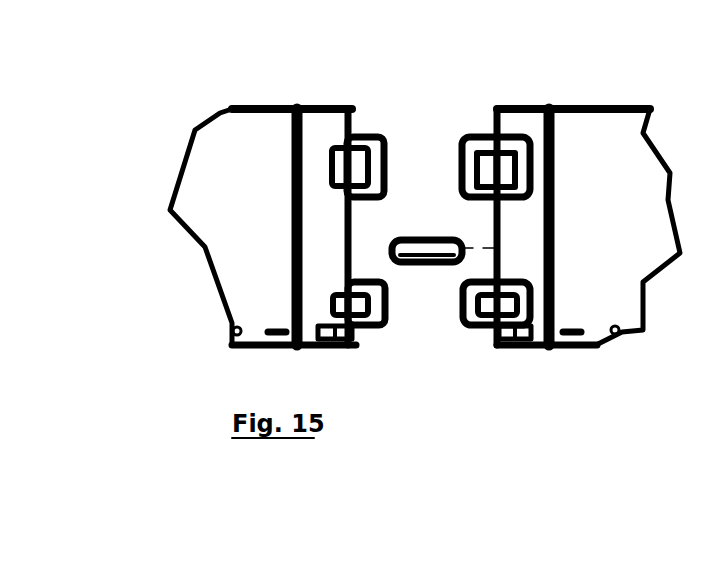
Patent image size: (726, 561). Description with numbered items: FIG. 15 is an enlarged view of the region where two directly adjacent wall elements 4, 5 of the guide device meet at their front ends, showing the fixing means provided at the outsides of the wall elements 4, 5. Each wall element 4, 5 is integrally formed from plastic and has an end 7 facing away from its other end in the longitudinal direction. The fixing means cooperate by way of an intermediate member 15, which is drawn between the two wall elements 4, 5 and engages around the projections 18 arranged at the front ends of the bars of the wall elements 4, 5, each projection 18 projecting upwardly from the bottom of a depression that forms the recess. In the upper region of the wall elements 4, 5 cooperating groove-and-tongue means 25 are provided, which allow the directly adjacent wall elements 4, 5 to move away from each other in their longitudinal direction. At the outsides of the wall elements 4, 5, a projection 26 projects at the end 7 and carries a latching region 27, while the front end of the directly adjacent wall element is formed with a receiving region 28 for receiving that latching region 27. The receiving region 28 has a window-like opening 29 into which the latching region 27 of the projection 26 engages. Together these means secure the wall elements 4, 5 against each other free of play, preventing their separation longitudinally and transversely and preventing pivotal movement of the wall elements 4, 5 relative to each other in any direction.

The wall element 4 is at (201, 112).
The wall element 5 is at (666, 120).
The end 7 is at (348, 128).
The intermediate member 15 is at (435, 237).
The projection 18 is at (340, 350).
The groove-and-tongue means 25 is at (421, 234).
The projection 26 is at (365, 195).
The latching region 27 is at (356, 158).
The receiving region 28 is at (472, 166).
The window-like opening 29 is at (502, 174).